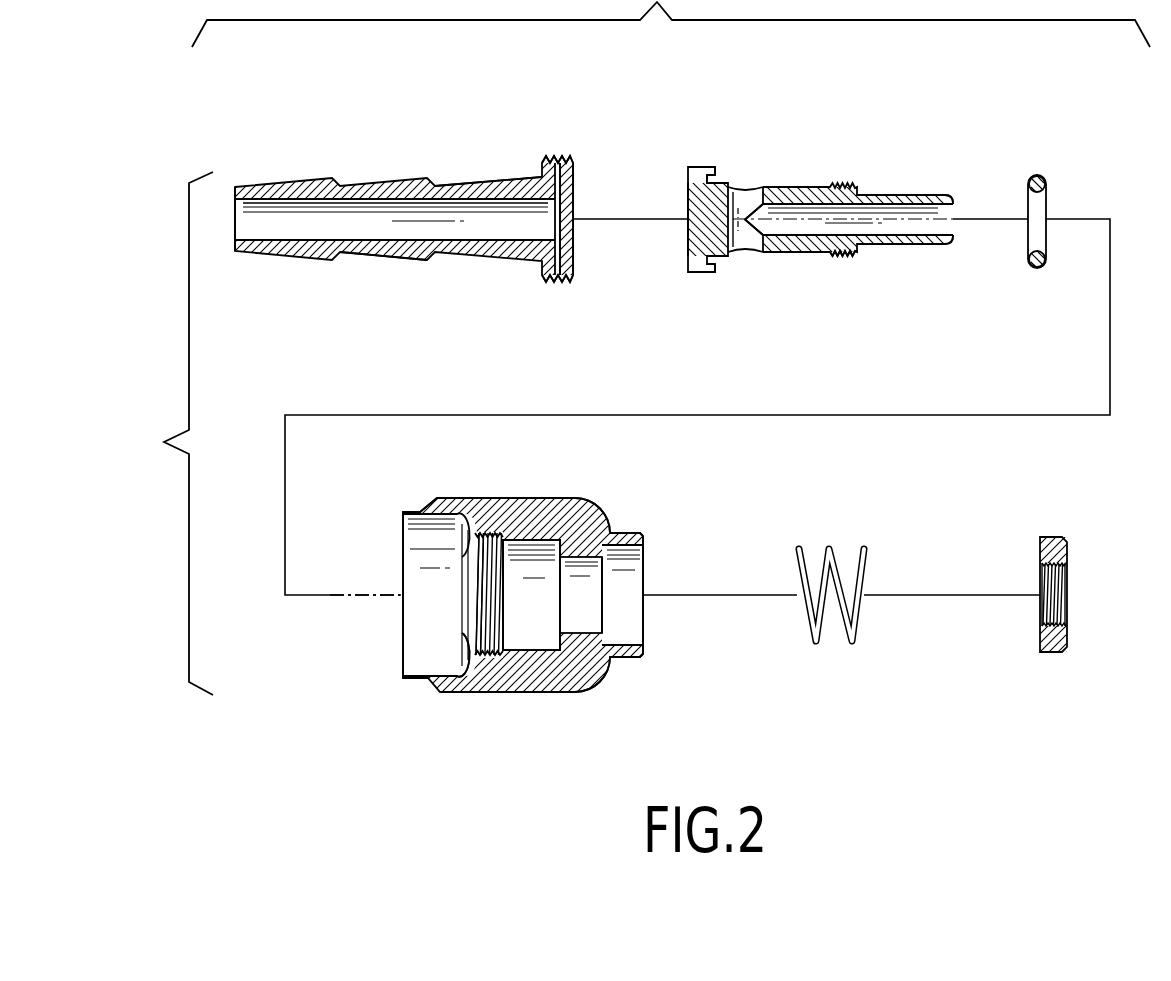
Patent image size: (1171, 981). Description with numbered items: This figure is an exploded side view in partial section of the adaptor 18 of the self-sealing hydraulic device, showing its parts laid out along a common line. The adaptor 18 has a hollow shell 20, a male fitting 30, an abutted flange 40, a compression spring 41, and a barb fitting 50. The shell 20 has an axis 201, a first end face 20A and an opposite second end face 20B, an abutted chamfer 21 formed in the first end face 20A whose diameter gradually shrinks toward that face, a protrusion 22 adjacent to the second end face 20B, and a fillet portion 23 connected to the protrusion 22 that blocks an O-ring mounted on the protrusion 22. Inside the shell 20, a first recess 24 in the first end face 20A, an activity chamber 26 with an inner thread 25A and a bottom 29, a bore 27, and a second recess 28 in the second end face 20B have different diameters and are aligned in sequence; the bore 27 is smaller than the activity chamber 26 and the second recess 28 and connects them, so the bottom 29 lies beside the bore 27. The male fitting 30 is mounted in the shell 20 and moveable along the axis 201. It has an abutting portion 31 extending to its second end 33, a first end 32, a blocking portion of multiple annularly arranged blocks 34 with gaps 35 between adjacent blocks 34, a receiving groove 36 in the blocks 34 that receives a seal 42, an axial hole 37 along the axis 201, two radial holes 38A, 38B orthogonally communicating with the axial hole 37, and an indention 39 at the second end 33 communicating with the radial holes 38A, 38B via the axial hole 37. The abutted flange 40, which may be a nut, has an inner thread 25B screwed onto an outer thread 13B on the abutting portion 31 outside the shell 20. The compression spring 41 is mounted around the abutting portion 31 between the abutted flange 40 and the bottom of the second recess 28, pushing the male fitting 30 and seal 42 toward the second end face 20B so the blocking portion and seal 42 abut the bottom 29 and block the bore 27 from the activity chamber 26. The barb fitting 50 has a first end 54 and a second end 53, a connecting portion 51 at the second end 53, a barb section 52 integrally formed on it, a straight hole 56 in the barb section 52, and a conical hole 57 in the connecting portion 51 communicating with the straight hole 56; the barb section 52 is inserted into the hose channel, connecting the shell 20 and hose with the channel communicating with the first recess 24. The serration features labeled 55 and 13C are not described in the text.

The adaptor 18 is at (171, 433).
The shell 20 is at (520, 507).
The first end face 20A is at (403, 658).
The second end face 20B is at (647, 612).
The abutted chamfer 21 is at (408, 510).
The protrusion 22 is at (622, 540).
The fillet portion 23 is at (587, 673).
The first recess 24 is at (442, 667).
The inner thread 25A is at (480, 537).
The inner thread 25B is at (1063, 577).
The activity chamber 26 is at (523, 640).
The bore 27 is at (597, 573).
The second recess 28 is at (643, 630).
The bottom 29 is at (547, 547).
The axis 201 is at (375, 580).
The male fitting 30 is at (822, 183).
The abutting portion 31 is at (905, 244).
The first end 32 is at (688, 240).
The second end 33 is at (955, 215).
The blocks 34 is at (702, 167).
The gaps 35 is at (700, 267).
The receiving groove 36 is at (712, 182).
The axial hole 37 is at (885, 213).
The radial hole 38A is at (750, 243).
The radial hole 38B is at (748, 199).
The indention 39 is at (943, 241).
The outer thread 13B is at (833, 254).
The abutted flange 40 is at (1091, 621).
The compression spring 41 is at (853, 634).
The seal 42 is at (1037, 177).
The barb fitting 50 is at (477, 100).
The connecting portion 51 is at (556, 170).
The barb section 52 is at (509, 189).
The second end 53 is at (573, 183).
The first end 54 is at (232, 249).
The barb 55 is at (381, 258).
The straight hole 56 is at (357, 201).
The conical hole 57 is at (563, 253).
The serration 13C is at (558, 286).